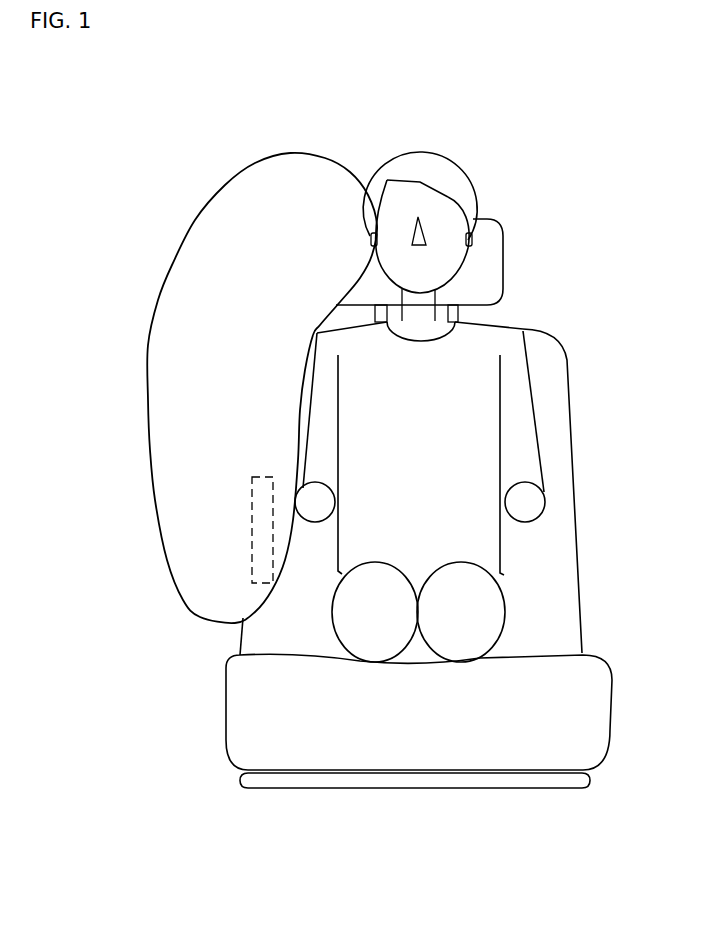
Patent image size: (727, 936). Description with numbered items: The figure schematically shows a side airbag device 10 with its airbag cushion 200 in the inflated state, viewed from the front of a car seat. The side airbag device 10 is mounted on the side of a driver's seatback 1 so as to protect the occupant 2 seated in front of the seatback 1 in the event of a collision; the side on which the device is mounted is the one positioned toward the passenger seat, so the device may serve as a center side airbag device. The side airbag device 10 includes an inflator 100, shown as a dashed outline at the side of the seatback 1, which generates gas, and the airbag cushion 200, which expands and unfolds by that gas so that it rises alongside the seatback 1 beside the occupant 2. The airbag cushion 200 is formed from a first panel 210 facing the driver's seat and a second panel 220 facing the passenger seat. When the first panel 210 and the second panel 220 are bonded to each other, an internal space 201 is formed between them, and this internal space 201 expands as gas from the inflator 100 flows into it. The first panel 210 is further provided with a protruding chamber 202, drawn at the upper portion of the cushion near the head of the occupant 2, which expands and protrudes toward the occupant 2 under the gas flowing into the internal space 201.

The side airbag device 10 is at (133, 80).
The seatback 1 is at (560, 592).
The occupant 2 is at (467, 430).
The inflator 100 is at (256, 540).
The airbag cushion 200 is at (213, 476).
The internal space 201 is at (195, 380).
The protruding chamber 202 is at (348, 220).
The first panel 210 is at (284, 563).
The second panel 220 is at (150, 478).